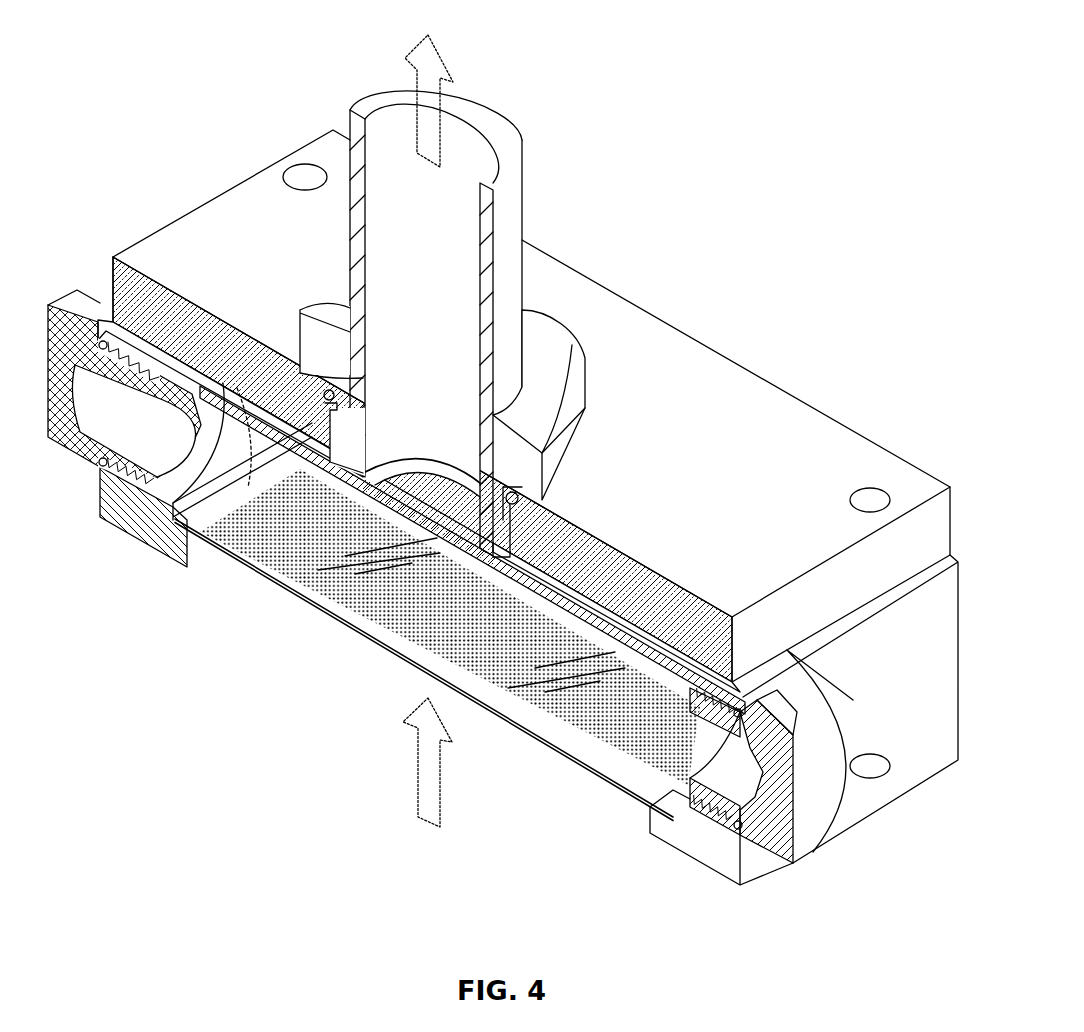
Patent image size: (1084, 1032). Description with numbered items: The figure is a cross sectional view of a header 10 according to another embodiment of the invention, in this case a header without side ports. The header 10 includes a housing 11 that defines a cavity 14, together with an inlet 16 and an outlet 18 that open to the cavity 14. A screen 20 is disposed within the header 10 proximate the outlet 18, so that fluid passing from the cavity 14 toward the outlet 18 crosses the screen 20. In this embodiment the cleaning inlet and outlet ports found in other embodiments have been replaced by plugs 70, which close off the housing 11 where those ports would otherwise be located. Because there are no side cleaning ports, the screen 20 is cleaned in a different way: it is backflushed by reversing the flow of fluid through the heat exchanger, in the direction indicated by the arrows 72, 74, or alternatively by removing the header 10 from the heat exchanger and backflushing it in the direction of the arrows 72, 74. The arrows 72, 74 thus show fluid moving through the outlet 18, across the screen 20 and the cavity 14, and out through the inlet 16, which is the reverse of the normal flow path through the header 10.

The header 10 is at (499, 479).
The housing 11 is at (818, 408).
The cavity 14 is at (113, 273).
The inlet 16 is at (524, 188).
The outlet 18 is at (624, 822).
The screen 20 is at (337, 622).
The plugs 70 is at (78, 291).
The arrows 72 is at (442, 795).
The arrows 74 is at (443, 62).